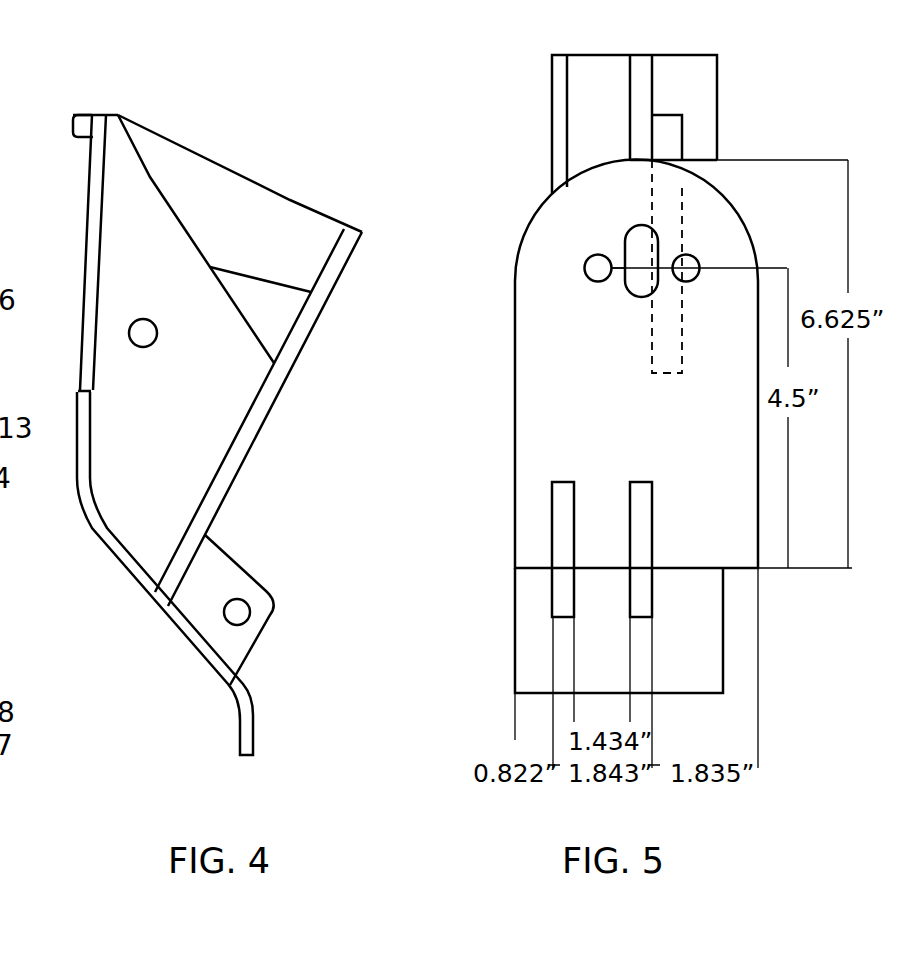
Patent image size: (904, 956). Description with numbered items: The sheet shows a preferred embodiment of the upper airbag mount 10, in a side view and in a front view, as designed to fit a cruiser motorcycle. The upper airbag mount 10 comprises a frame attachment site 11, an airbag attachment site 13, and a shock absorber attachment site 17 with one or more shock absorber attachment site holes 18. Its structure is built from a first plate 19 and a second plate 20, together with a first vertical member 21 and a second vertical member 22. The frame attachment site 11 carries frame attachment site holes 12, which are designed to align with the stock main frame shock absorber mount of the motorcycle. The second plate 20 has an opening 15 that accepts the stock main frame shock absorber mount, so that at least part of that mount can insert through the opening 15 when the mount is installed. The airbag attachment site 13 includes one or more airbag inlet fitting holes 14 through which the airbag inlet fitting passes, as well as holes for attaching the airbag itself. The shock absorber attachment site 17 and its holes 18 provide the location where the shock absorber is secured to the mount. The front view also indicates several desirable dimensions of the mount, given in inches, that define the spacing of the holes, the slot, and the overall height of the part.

In FIG. 4, the upper airbag mount 10 is at (155, 132).
In FIG. 5, the upper airbag mount 10 is at (536, 86).
In FIG. 4, the frame attachment site 11 is at (120, 362).
In FIG. 4, the frame attachment site holes 12 is at (132, 312).
In FIG. 5, the frame attachment site holes 12 is at (590, 259).
In FIG. 5, the airbag attachment site 13 is at (610, 295).
In FIG. 5, the airbag inlet fitting holes 14 is at (647, 282).
In FIG. 5, the opening 15 is at (665, 128).
In FIG. 4, the shock absorber attachment site 17 is at (190, 610).
In FIG. 5, the shock absorber attachment site 17 is at (563, 565).
In FIG. 4, the shock absorber attachment site holes 18 is at (235, 617).
In FIG. 4, the first plate 19 is at (302, 333).
In FIG. 5, the first plate 19 is at (532, 398).
In FIG. 5, the second plate 20 is at (667, 647).
In FIG. 4, the first vertical member 21 is at (115, 223).
In FIG. 4, the second vertical member 22 is at (233, 187).